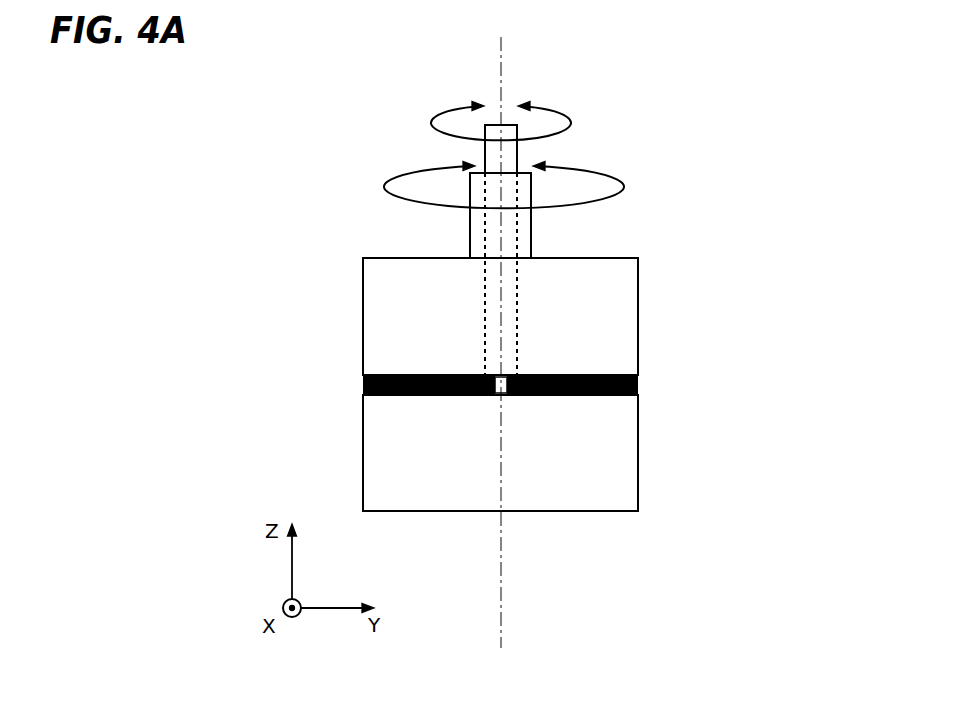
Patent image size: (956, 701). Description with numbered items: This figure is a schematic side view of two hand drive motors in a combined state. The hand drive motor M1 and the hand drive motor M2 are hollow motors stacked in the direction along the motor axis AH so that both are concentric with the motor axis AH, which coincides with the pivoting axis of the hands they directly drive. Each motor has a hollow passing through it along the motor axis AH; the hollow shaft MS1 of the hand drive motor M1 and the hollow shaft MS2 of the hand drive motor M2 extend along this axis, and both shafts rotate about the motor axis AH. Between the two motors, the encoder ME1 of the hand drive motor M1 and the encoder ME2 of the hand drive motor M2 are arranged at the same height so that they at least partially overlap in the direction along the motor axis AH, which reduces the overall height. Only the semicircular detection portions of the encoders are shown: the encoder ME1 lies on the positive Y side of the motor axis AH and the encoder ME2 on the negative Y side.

The hollow shaft MS2 is at (485, 158).
The hollow shaft MS1 is at (470, 223).
The hand drive motor M1 is at (349, 320).
The hand drive motor M2 is at (349, 461).
The encoder ME1 is at (639, 382).
The encoder ME2 is at (363, 383).
The motor axis AH is at (501, 610).